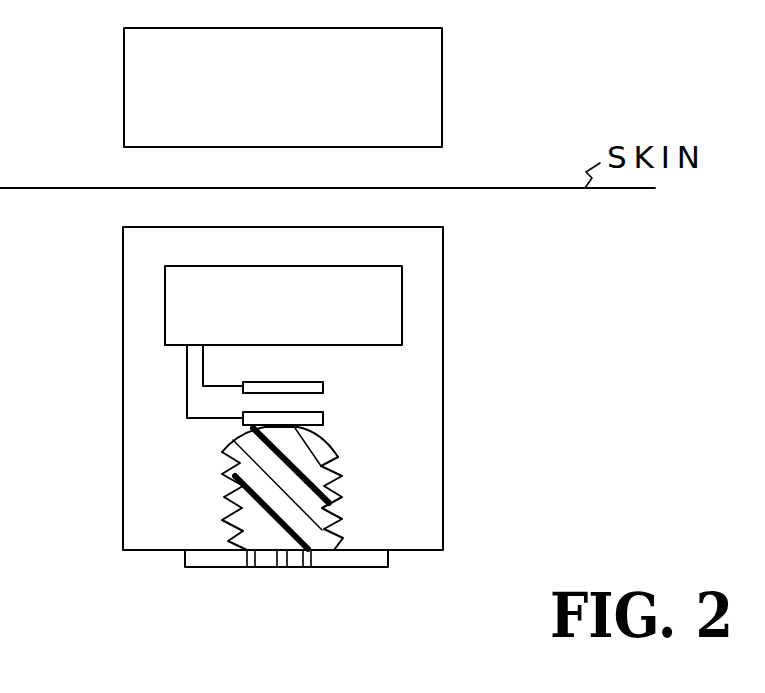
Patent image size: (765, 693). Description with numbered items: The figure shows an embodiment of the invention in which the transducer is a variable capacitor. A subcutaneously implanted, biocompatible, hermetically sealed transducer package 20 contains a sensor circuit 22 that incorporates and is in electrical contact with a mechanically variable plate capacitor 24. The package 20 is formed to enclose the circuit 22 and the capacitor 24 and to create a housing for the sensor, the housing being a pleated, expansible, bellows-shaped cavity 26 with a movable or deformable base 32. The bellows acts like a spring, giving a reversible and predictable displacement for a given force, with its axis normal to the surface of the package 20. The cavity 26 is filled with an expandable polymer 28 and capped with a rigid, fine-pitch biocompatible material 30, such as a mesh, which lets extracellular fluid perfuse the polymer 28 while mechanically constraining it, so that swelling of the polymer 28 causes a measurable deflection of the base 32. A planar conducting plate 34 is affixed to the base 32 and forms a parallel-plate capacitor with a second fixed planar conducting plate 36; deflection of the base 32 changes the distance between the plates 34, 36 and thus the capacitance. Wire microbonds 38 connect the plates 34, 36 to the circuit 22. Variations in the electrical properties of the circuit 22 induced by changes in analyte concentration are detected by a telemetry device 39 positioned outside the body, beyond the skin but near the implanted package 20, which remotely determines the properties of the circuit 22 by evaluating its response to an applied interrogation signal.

The transducer package 20 is at (122, 317).
The sensor circuit 22 is at (402, 302).
The mechanically variable plate capacitor 24 is at (356, 404).
The bellows-shaped cavity 26 is at (335, 525).
The expandable polymer 28 is at (247, 500).
The rigid fine-pitch biocompatible material 30 is at (215, 568).
The deformable base 32 is at (240, 436).
The planar conducting plate 34 is at (323, 419).
The second fixed planar conducting plate 36 is at (323, 386).
The wire microbonds 38 is at (202, 378).
The telemetry device 39 is at (442, 98).